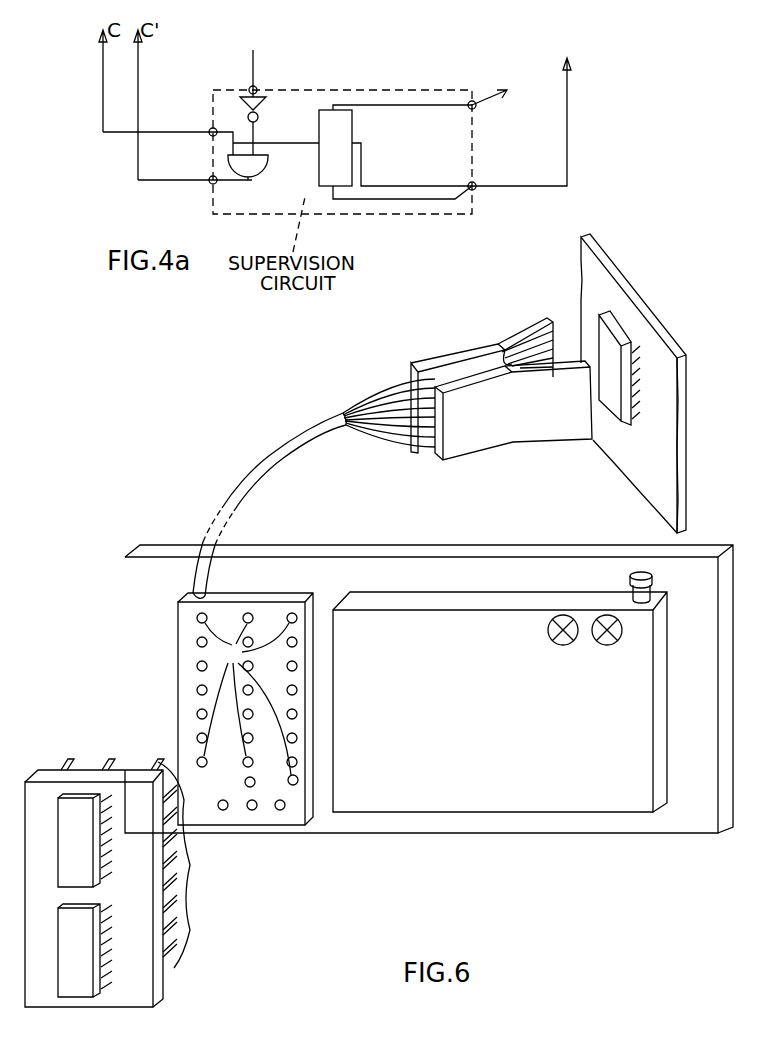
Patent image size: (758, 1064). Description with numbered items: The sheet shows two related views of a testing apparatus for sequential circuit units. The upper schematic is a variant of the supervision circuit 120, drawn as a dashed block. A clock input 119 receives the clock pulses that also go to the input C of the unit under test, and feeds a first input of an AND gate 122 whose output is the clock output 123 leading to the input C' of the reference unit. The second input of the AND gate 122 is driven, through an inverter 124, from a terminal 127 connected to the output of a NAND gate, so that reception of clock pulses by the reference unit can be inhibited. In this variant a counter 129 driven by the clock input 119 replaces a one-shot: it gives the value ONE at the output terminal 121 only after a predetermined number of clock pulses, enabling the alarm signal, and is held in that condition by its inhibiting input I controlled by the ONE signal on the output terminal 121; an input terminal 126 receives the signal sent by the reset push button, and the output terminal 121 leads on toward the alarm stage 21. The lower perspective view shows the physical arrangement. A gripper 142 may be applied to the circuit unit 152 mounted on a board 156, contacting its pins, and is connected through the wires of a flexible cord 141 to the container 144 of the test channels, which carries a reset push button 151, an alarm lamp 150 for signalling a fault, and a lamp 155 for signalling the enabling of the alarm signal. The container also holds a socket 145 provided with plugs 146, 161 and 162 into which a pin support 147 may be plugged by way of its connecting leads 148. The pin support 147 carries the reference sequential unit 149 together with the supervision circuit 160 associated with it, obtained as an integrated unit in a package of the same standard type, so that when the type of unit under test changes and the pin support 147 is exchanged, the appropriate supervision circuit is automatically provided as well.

In FIG. 4a, the clock input 119 is at (248, 130).
In FIG. 4a, the supervision circuit 120 is at (451, 216).
In FIG. 4a, the output terminal 121 is at (489, 174).
In FIG. 4a, the AND gate 122 is at (266, 170).
In FIG. 4a, the clock output 123 is at (210, 185).
In FIG. 4a, the inverter 124 is at (271, 126).
In FIG. 4a, the input terminal 126 is at (497, 108).
In FIG. 4a, the terminal 127 is at (272, 73).
In FIG. 4a, the counter 129 is at (395, 152).
In FIG. 4a, the output to detector 21 is at (541, 122).
In FIG. 6, the flexible cord 141 is at (269, 505).
In FIG. 6, the gripper 142 is at (498, 352).
In FIG. 6, the housing 144 is at (637, 806).
In FIG. 6, the socket 145 is at (245, 695).
In FIG. 6, the plug 146 is at (247, 699).
In FIG. 6, the pin support 147 is at (75, 748).
In FIG. 6, the ribbon cable 148 is at (185, 868).
In FIG. 6, the reference sequential unit 149 is at (66, 862).
In FIG. 6, the alarm lamp 150 is at (612, 645).
In FIG. 6, the reset push button 151 is at (655, 586).
In FIG. 6, the circuit unit 152 is at (632, 418).
In FIG. 6, the lamp 155 is at (566, 645).
In FIG. 6, the printed circuit board 156 is at (635, 298).
In FIG. 6, the supervision circuit 160 is at (66, 967).
In FIG. 6, the plug 161 is at (249, 802).
In FIG. 6, the plug 162 is at (278, 801).